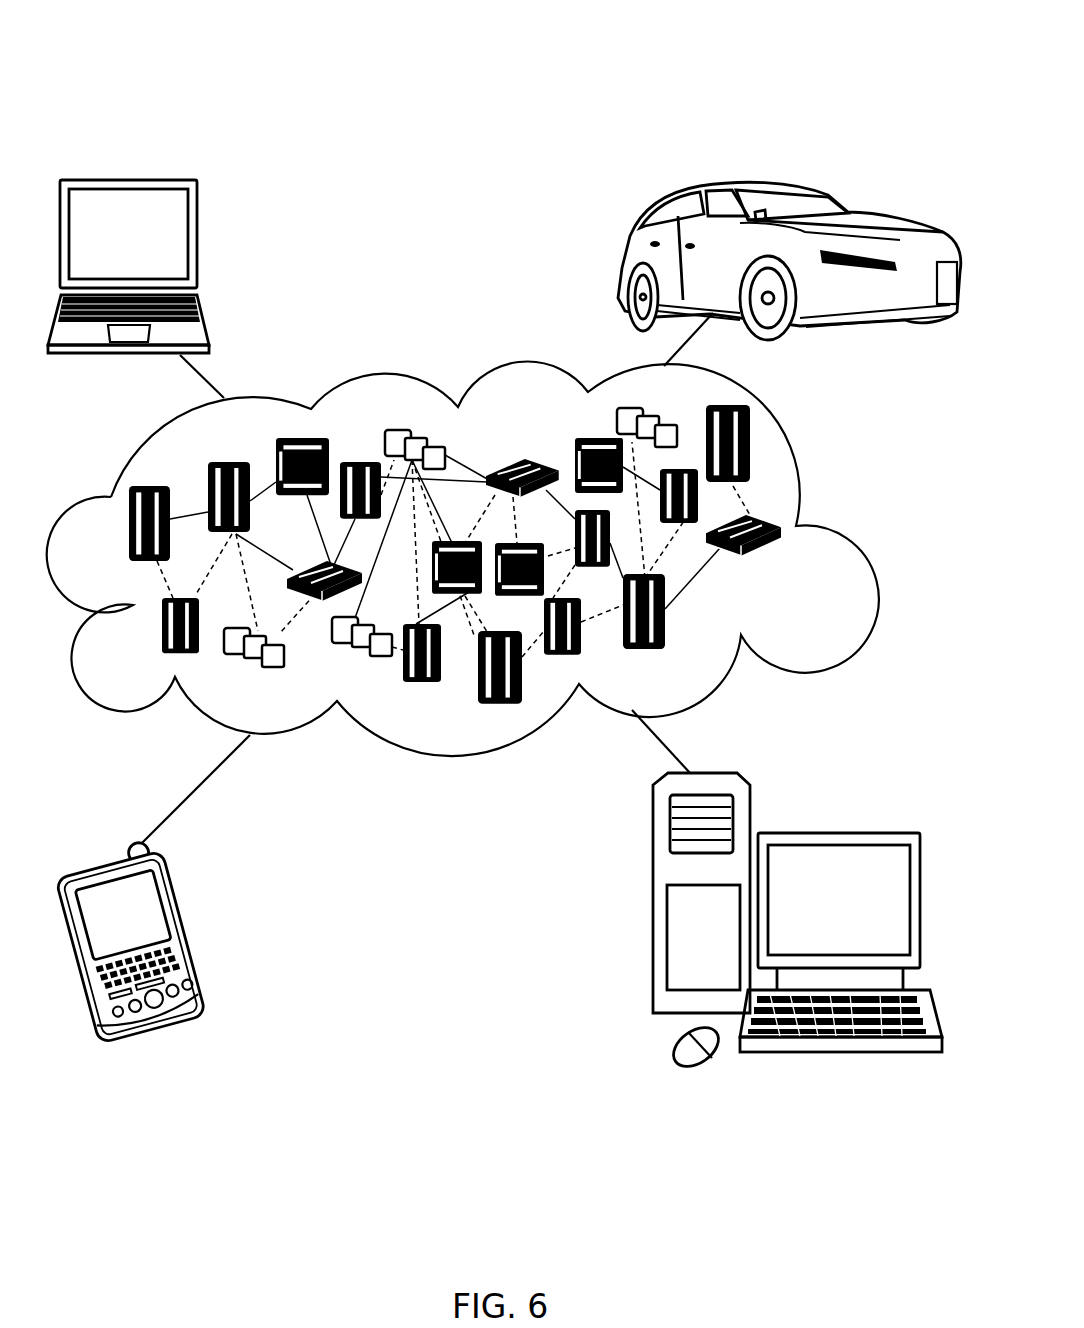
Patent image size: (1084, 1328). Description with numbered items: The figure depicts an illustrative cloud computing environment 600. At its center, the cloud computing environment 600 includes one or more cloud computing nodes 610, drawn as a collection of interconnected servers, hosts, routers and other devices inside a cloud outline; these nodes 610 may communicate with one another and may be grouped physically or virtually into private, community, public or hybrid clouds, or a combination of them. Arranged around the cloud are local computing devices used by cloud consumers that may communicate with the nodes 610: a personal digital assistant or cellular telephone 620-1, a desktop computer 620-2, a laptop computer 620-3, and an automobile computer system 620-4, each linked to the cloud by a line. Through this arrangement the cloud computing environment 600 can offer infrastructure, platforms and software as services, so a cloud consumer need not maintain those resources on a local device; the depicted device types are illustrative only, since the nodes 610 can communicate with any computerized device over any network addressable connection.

The cloud computing environment 600 is at (782, 38).
The cloud computing nodes 610 is at (786, 565).
The personal digital assistant (PDA) or cellular telephone 620-1 is at (190, 933).
The desktop computer 620-2 is at (843, 833).
The laptop computer 620-3 is at (198, 245).
The automobile computer system 620-4 is at (617, 262).